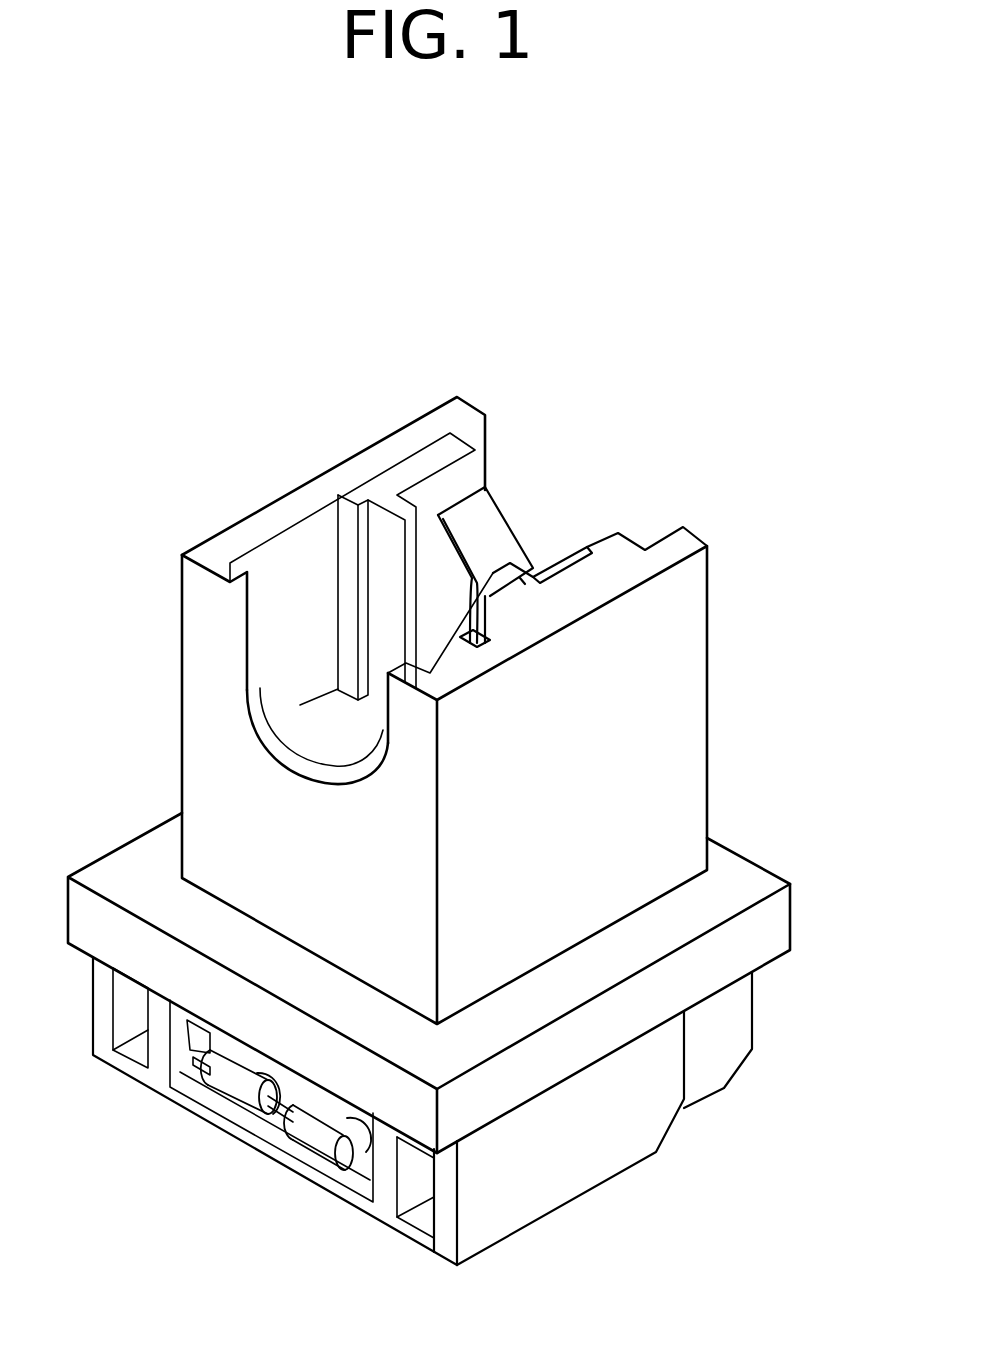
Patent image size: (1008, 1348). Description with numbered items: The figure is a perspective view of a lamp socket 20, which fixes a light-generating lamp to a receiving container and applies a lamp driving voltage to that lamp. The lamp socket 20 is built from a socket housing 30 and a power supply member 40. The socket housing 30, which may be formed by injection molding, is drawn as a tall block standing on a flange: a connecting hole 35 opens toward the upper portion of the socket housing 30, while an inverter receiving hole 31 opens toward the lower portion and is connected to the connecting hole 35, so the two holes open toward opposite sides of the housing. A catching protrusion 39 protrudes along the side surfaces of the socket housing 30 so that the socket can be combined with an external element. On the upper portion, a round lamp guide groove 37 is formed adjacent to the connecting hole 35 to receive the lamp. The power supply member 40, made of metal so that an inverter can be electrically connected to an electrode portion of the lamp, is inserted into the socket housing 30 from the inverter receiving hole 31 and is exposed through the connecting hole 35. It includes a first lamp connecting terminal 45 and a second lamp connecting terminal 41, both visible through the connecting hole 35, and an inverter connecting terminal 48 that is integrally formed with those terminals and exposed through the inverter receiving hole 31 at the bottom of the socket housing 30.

The lamp socket 20 is at (528, 321).
The socket housing 30 is at (688, 714).
The inverter receiving hole 31 is at (277, 1130).
The connecting hole 35 is at (437, 542).
The lamp guide groove 37 is at (264, 704).
The catching protrusion 39 is at (780, 922).
The power supply member 40 is at (572, 511).
The second lamp connecting terminal 41 is at (488, 517).
The first lamp connecting terminal 45 is at (558, 548).
The inverter connecting terminal 48 is at (237, 1080).